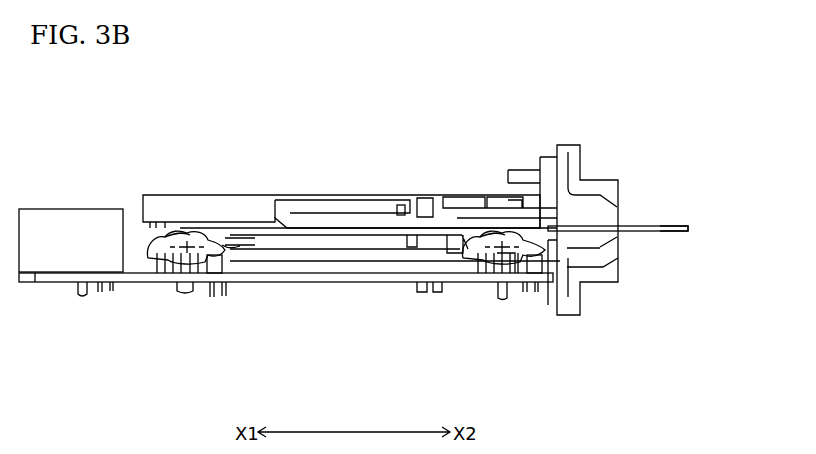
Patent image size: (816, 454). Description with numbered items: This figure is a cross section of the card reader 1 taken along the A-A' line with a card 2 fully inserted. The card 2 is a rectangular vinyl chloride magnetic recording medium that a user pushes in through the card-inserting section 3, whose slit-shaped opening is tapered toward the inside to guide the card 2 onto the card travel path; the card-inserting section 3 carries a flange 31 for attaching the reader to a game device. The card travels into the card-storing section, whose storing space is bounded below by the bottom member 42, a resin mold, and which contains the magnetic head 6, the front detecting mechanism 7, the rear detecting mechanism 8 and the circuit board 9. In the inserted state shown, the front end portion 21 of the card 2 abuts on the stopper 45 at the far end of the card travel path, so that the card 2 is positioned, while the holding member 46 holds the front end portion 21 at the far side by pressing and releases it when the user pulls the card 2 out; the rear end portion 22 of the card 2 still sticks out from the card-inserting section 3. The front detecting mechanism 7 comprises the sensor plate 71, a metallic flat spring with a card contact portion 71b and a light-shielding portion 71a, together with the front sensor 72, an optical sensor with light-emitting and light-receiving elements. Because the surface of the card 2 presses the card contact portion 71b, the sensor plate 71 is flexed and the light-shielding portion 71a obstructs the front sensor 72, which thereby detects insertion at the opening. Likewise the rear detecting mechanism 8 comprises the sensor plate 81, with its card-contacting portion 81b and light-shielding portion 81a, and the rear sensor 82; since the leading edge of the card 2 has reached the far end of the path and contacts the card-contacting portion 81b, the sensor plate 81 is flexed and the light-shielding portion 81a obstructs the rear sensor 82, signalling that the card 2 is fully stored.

The card reader 1 is at (649, 416).
The card 2 is at (687, 233).
The rear end portion 22 is at (669, 217).
The front end portion 21 is at (226, 210).
The card-inserting section 3 is at (629, 204).
The flange 31 is at (578, 145).
The bottom member 42 is at (357, 268).
The stopper 45 is at (170, 228).
The holding member 46 is at (162, 205).
The magnetic head 6 is at (408, 262).
The front detecting mechanism 7 is at (533, 304).
The sensor plate 71 is at (470, 265).
The light-shielding portion 71a is at (537, 290).
The card contact portion 71b is at (471, 233).
The front sensor 72 is at (503, 285).
The rear detecting mechanism 8 is at (209, 303).
The sensor plate 81 is at (150, 278).
The light-shielding portion 81a is at (232, 258).
The card-contacting portion 81b is at (190, 230).
The rear sensor 82 is at (228, 283).
The circuit board 9 is at (53, 283).